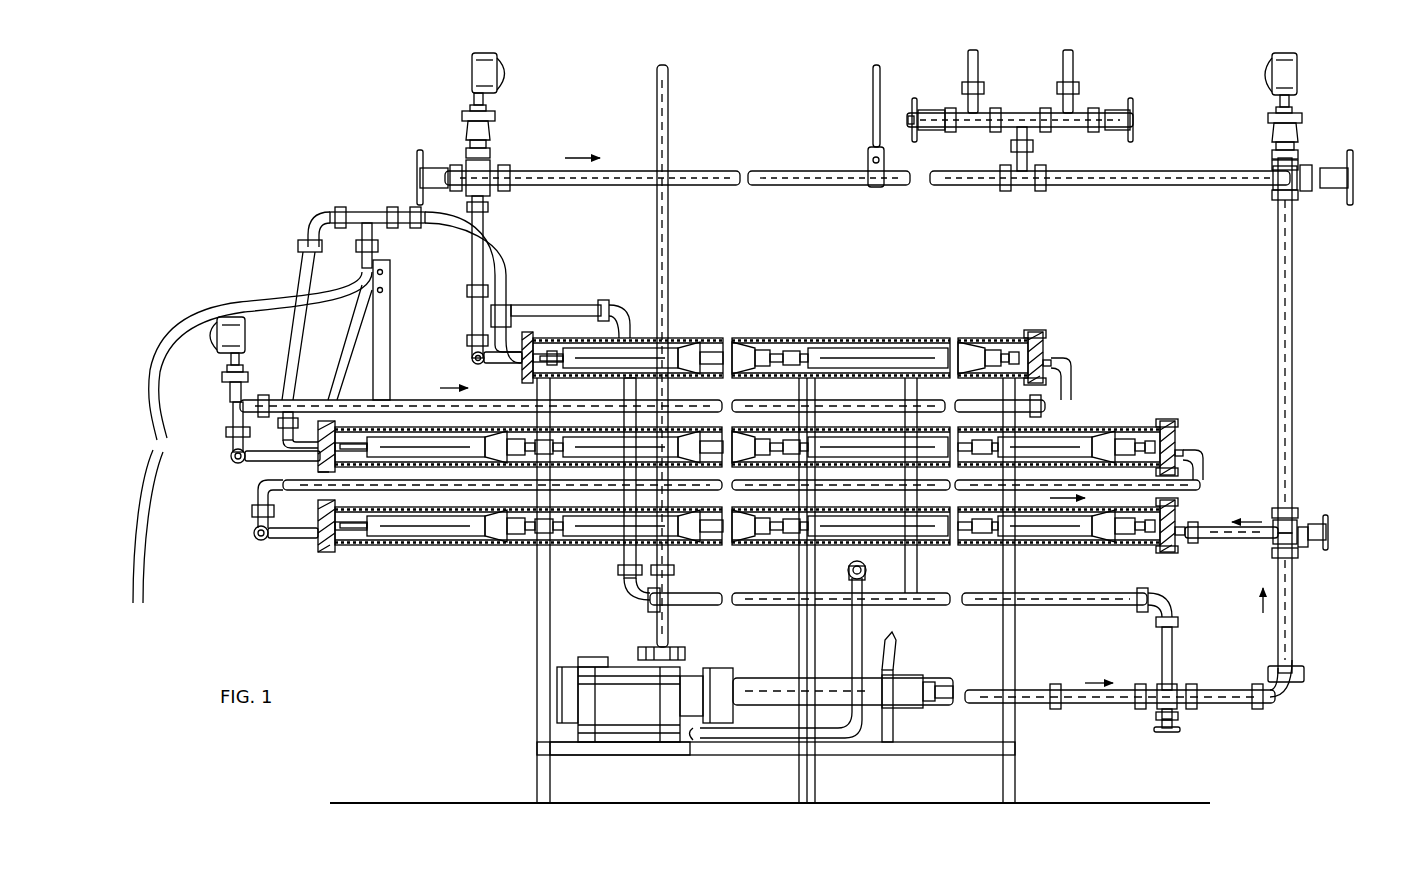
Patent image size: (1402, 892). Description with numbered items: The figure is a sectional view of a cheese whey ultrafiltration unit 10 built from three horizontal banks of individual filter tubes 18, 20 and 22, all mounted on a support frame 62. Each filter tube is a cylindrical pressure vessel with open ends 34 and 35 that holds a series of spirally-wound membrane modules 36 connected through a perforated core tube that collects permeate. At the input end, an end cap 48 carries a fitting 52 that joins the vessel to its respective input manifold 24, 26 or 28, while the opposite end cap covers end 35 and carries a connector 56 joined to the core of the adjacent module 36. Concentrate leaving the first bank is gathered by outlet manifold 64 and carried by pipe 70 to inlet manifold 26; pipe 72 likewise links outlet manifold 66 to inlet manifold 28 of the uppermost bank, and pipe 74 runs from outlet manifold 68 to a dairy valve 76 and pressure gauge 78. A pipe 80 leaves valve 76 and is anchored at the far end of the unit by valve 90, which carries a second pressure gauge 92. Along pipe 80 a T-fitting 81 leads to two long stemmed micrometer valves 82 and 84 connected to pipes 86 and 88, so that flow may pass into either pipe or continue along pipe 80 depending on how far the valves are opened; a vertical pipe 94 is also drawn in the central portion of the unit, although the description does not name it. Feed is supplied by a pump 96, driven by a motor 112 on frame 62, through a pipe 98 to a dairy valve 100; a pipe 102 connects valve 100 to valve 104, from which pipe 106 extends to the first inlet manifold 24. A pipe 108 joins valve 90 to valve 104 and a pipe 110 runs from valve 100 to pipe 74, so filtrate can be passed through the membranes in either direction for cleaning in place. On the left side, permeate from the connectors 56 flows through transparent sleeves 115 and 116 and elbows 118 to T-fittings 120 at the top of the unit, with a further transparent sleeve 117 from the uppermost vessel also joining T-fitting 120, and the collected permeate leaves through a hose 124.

The ultrafiltration unit 10 is at (487, 624).
The filter tube 18 is at (445, 550).
The filter tube 20 is at (1093, 425).
The filter tube 22 is at (886, 334).
The input manifold 24 is at (1200, 527).
The input manifold 26 is at (1204, 455).
The input manifold 28 is at (1072, 360).
The open end 34 is at (1028, 335).
The open end 35 is at (520, 370).
The spirally-wound membrane module 36 is at (657, 360).
The end cap 48 is at (1040, 330).
The fitting 52 is at (1050, 358).
The connector 56 is at (552, 362).
The support frame 62 is at (533, 680).
The outlet manifold 64 is at (258, 540).
The outlet manifold 66 is at (232, 462).
The outlet manifold 68 is at (470, 358).
The pipe 70 is at (475, 500).
The pipe 72 is at (405, 400).
The pipe 74 is at (472, 258).
The dairy valve 76 is at (432, 168).
The pressure gauge 78 is at (499, 70).
The pipe 80 is at (778, 176).
The T-fitting 81 is at (1024, 190).
The micrometer valve 82 is at (926, 115).
The micrometer valve 84 is at (1132, 116).
The pipe 86 is at (980, 70).
The pipe 88 is at (1075, 72).
The valve 90 is at (1334, 188).
The pressure gauge 92 is at (1268, 78).
The vertical pipe 94 is at (670, 236).
The pump 96 is at (637, 742).
The pipe 98 is at (1097, 703).
The dairy valve 100 is at (1178, 705).
The pipe 102 is at (1278, 637).
The valve 104 is at (1298, 522).
The pipe 106 is at (1248, 540).
The pipe 108 is at (1292, 340).
The pipe 110 is at (1000, 603).
The motor 112 is at (605, 665).
The transparent sleeve 115 is at (303, 312).
The transparent sleeve 116 is at (359, 330).
The transparent sleeve 117 is at (486, 248).
The elbow 118 is at (306, 218).
The T-fitting 120 is at (360, 205).
The hose 124 is at (175, 329).